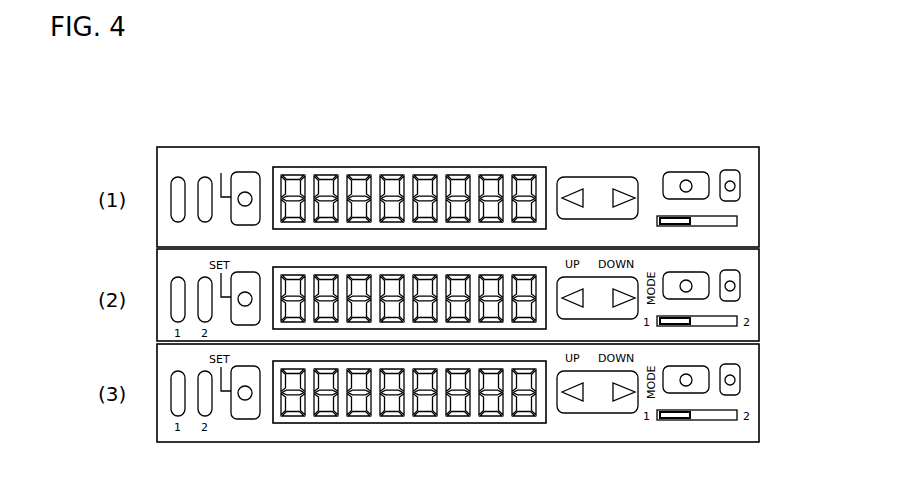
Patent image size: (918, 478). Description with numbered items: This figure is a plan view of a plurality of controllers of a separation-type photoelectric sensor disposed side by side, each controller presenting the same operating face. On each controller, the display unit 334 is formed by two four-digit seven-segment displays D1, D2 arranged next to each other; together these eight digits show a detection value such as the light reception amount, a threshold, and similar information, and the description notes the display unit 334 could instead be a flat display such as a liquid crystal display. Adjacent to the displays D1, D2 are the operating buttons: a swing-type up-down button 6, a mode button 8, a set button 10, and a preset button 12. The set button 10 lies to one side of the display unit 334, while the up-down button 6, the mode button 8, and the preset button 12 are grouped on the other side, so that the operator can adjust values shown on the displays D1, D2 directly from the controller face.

The set button 10 is at (245, 171).
The display unit 334 is at (409, 146).
The four-digit seven-segment display D1 is at (343, 167).
The four-digit seven-segment display D2 is at (474, 163).
The up-down button 6 is at (592, 177).
The mode button 8 is at (686, 172).
The preset button 12 is at (730, 170).